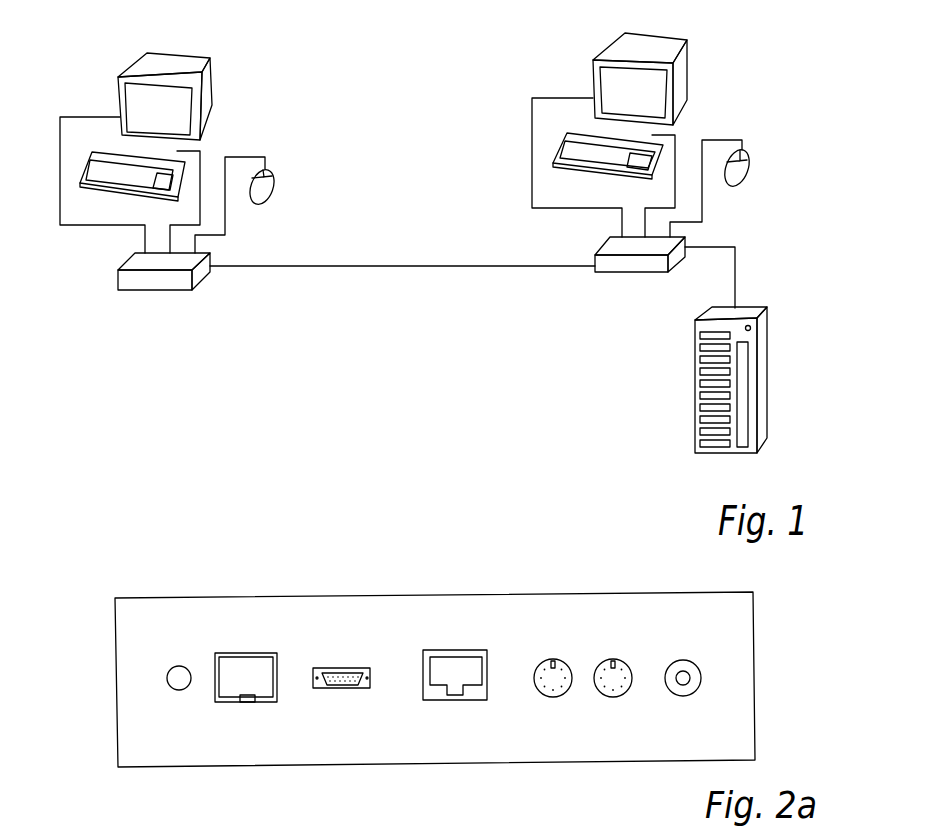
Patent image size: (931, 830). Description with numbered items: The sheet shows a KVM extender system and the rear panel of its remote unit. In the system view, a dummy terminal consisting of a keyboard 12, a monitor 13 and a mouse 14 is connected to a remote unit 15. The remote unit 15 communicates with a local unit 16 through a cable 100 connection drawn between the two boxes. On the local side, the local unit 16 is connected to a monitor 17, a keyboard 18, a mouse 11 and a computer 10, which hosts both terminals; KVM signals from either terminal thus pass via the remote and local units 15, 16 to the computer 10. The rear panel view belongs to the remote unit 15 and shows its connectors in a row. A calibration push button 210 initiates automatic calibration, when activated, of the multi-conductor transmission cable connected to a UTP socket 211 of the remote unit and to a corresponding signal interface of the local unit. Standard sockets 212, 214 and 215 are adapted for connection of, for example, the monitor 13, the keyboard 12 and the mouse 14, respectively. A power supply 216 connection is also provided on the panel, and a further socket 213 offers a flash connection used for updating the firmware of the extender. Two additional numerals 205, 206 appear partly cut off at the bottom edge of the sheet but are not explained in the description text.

In FIG. 1, the computer 10 is at (695, 390).
In FIG. 1, the local mouse 11 is at (750, 177).
In FIG. 1, the keyboard 12 is at (100, 152).
In FIG. 1, the monitor 13 is at (118, 93).
In FIG. 1, the mouse 14 is at (270, 198).
In FIG. 1, the remote unit 15 is at (120, 270).
In FIG. 1, the local unit 16 is at (607, 245).
In FIG. 1, the monitor 17 is at (593, 78).
In FIG. 1, the keyboard 18 is at (560, 147).
In FIG. 1, the cable 100 is at (398, 267).
In FIG. 2A, the connector 205 is at (502, 826).
In FIG. 2A, the connector 206 is at (621, 826).
In FIG. 2A, the calibration push button 210 is at (178, 665).
In FIG. 2A, the UTP socket 211 is at (252, 653).
In FIG. 2A, the standard socket 212 is at (342, 668).
In FIG. 2A, the socket 213 is at (442, 652).
In FIG. 2A, the standard socket 214 is at (553, 660).
In FIG. 2A, the standard socket 215 is at (612, 660).
In FIG. 2A, the power supply 216 is at (688, 659).